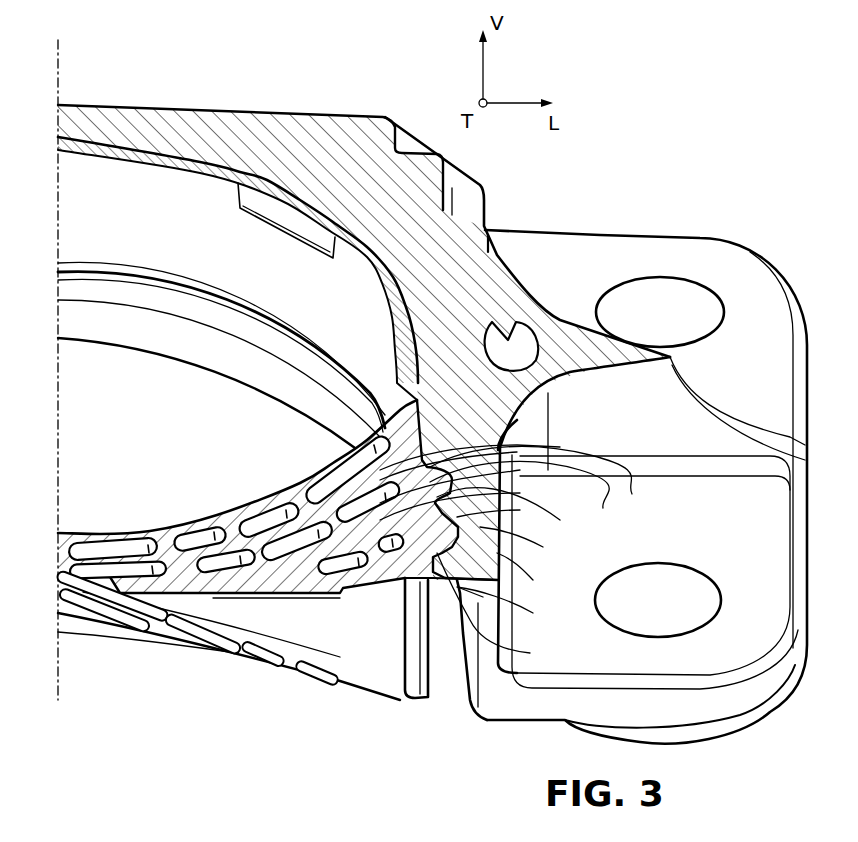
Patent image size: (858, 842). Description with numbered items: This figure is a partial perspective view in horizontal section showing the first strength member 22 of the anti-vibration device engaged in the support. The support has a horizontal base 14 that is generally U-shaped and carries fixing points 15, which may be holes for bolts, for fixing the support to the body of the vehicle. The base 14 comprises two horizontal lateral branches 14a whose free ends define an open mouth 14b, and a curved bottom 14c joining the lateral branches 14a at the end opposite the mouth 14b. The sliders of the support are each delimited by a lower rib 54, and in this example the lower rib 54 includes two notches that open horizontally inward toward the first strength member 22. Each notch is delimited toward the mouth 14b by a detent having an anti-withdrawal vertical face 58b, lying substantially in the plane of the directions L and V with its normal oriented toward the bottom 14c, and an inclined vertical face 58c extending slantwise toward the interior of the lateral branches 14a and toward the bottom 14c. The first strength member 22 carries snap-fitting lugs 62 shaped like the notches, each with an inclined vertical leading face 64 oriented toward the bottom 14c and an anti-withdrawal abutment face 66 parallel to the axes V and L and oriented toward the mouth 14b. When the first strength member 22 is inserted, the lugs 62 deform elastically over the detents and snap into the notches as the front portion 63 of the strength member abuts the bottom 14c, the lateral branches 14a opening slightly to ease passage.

The horizontal base 14 is at (740, 693).
The lateral branches 14a is at (447, 350).
The open mouth 14b is at (455, 690).
The curved bottom 14c is at (224, 143).
The fixing points 15 is at (660, 313).
The first strength member 22 is at (355, 687).
The lower rib 54 is at (565, 258).
The anti-withdrawal vertical face 58b is at (420, 478).
The inclined vertical face 58c is at (488, 551).
The snap-fitting lugs 62 is at (502, 524).
The front portion 63 is at (130, 150).
The inclined vertical leading face 64 is at (519, 505).
The anti-withdrawal abutment face 66 is at (390, 433).